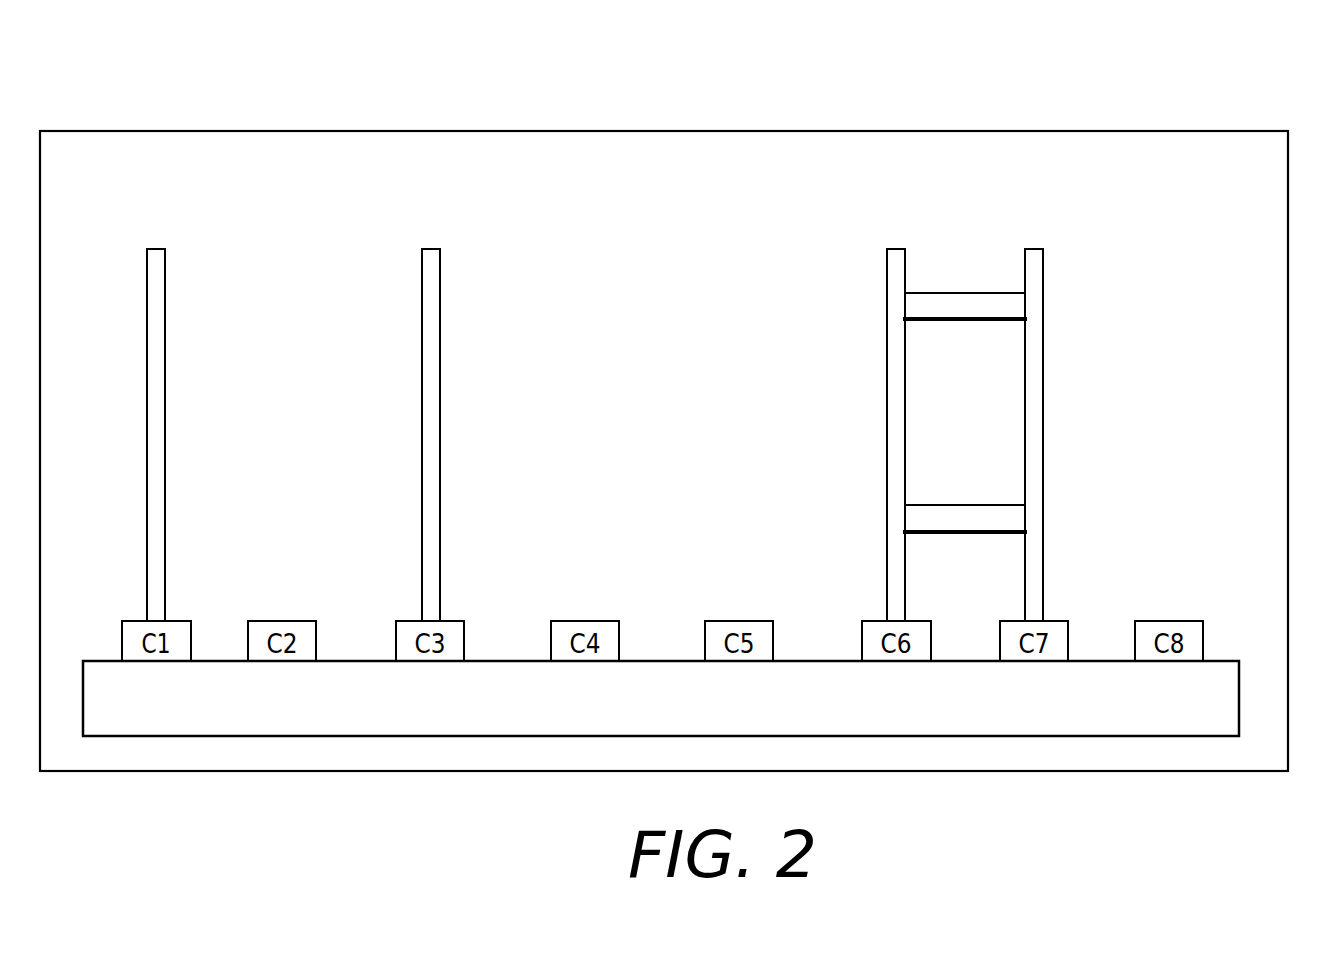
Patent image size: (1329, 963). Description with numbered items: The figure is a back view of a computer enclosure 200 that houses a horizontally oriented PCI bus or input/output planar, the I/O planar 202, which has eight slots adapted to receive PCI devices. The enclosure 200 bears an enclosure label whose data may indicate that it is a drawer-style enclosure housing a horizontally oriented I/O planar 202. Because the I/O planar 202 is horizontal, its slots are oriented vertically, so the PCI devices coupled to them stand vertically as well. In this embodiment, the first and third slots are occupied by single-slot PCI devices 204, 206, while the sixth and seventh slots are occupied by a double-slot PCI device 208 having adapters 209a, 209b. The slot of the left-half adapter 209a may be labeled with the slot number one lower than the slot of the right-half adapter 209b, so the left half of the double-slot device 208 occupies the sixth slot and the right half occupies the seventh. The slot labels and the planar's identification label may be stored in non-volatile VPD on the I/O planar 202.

The computer enclosure 200 is at (506, 120).
The I/O planar 202 is at (1063, 734).
The single-slot PCI device 204 is at (166, 249).
The single-slot PCI device 206 is at (441, 249).
The double-slot PCI device 208 is at (1005, 292).
The adapter 209a is at (886, 249).
The adapter 209b is at (1044, 249).